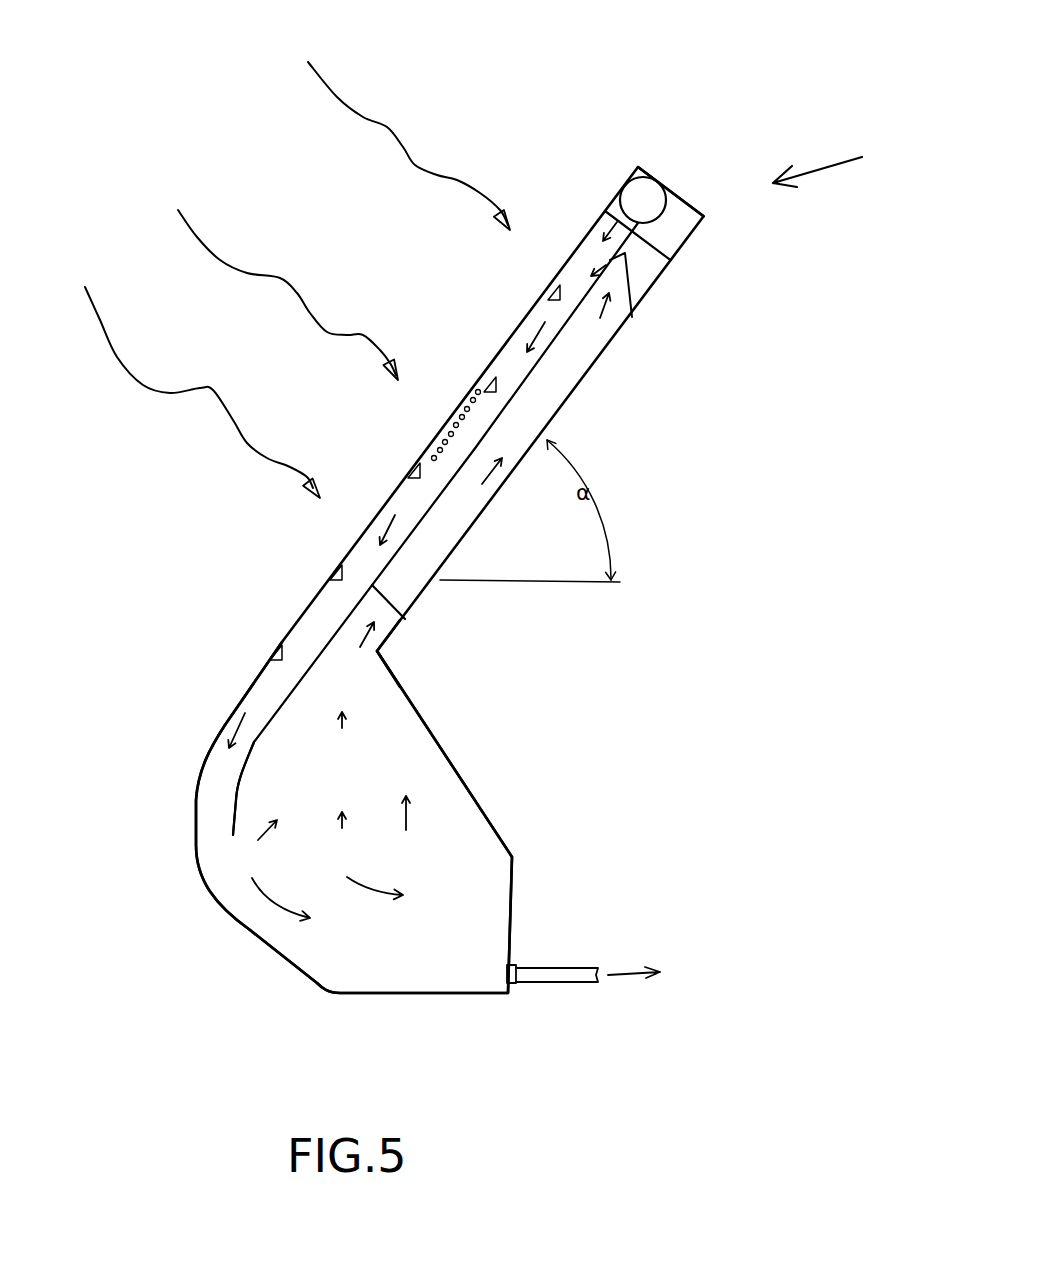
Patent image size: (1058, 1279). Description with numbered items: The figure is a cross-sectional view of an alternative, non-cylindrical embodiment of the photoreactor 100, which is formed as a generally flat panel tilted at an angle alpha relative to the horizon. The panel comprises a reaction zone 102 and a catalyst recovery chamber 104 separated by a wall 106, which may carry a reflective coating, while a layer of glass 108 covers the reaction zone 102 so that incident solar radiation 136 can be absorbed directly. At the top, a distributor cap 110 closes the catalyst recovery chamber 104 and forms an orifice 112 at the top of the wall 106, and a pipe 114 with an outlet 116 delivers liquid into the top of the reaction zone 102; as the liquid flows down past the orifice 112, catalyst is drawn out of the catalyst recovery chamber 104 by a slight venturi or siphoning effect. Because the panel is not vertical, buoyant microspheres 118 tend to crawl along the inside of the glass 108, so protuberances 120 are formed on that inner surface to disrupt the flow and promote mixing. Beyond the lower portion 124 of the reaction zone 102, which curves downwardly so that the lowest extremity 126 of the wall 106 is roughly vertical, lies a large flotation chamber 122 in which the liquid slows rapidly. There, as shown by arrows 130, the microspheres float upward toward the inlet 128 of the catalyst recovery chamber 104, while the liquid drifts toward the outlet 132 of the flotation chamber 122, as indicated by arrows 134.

The photoreactor 100 is at (850, 166).
The reaction zone 102 is at (536, 319).
The catalyst recovery chamber 104 is at (560, 385).
The wall 106 is at (413, 622).
The glass 108 is at (358, 546).
The distributor cap 110 is at (627, 268).
The orifice 112 is at (632, 290).
The pipe 114 is at (651, 198).
The outlet 116 is at (612, 206).
The microspheres 118 is at (450, 408).
The protuberances 120 is at (274, 653).
The flotation chamber 122 is at (417, 850).
The lower portion 124 is at (213, 805).
The lowest extremity 126 is at (233, 828).
The inlet 128 is at (388, 667).
The arrows 130 is at (362, 824).
The outlet 132 is at (517, 963).
The arrows 134 is at (268, 895).
The incident solar radiation 136 is at (194, 222).